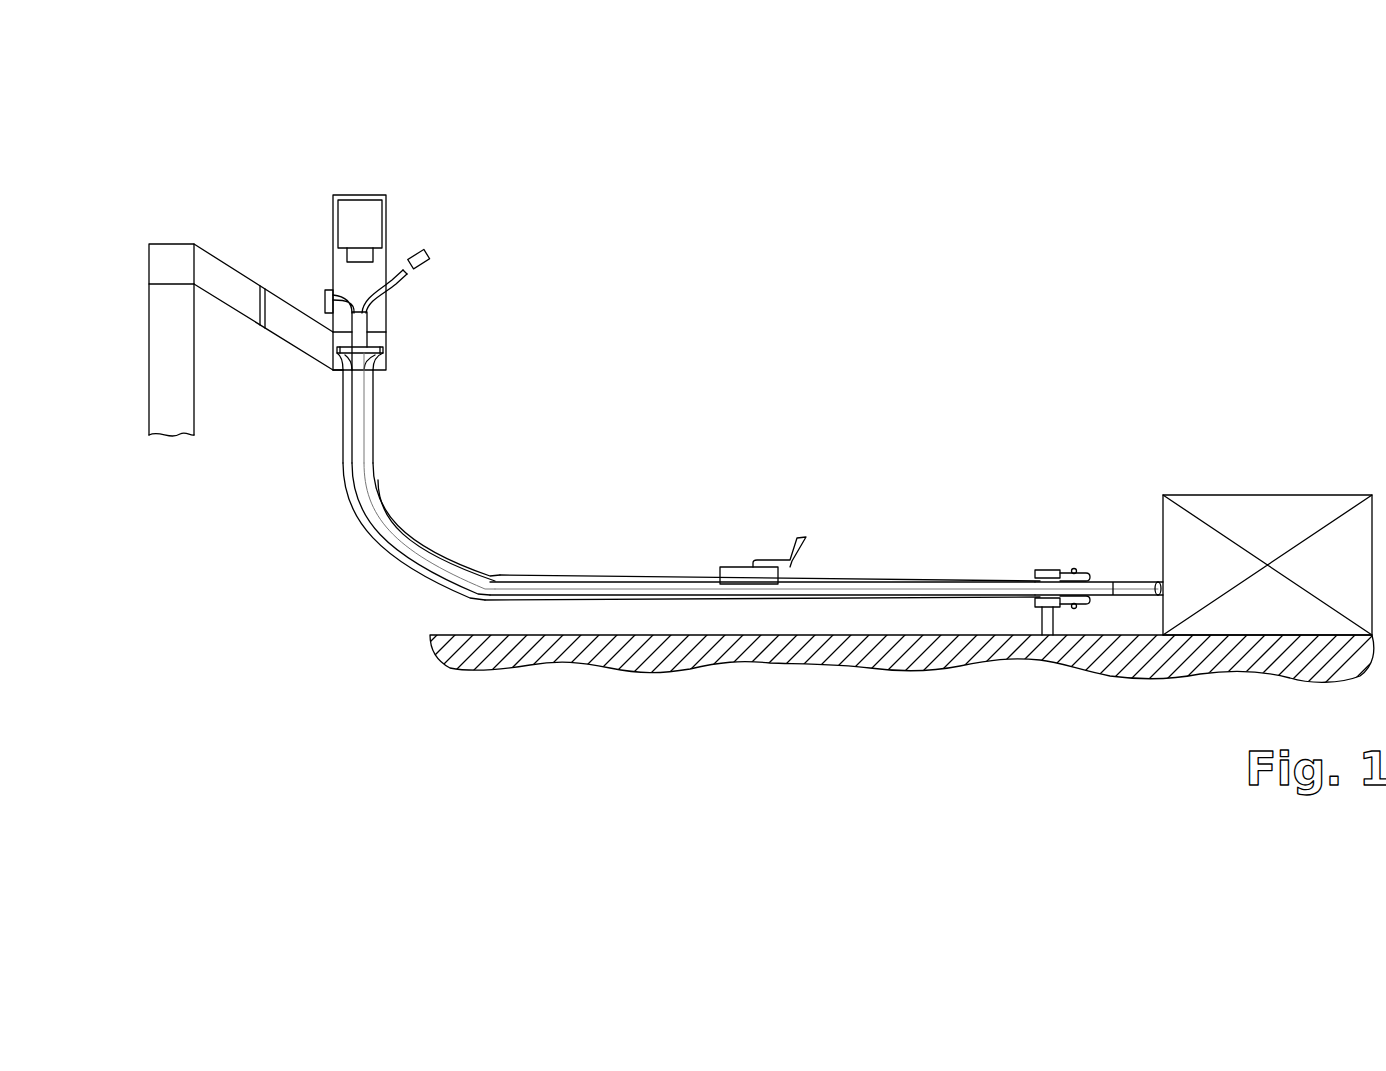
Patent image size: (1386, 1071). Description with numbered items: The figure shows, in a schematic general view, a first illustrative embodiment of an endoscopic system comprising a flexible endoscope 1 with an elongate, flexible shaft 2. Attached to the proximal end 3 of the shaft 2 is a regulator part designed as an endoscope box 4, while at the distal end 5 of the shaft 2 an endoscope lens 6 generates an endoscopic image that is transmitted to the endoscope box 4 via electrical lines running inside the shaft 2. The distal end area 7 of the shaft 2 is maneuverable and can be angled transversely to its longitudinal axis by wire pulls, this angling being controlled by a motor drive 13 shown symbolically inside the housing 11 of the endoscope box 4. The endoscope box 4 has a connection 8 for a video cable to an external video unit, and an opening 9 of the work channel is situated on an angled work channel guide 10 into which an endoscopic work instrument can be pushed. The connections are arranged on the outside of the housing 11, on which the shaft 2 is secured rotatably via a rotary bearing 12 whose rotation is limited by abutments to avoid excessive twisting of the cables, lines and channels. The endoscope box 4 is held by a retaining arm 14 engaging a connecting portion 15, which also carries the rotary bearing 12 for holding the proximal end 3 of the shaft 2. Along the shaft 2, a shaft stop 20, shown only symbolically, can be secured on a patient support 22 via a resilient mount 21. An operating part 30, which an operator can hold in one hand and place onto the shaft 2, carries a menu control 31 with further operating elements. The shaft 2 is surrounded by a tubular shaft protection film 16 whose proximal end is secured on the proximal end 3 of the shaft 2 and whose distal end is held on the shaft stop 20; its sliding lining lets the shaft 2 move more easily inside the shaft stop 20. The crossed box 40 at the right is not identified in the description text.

The flexible endoscope 1 is at (535, 486).
The shaft 2 is at (430, 572).
The proximal end 3 is at (416, 386).
The endoscope box 4 is at (444, 220).
The distal end 5 is at (1138, 484).
The endoscope lens 6 is at (1155, 581).
The distal end area 7 is at (1125, 586).
The connection 8 is at (329, 292).
The opening 9 is at (428, 258).
The work channel guide 10 is at (397, 268).
The housing 11 is at (384, 314).
The rotary bearing 12 is at (385, 350).
The motor drive 13 is at (358, 210).
The retaining arm 14 is at (140, 280).
The connecting portion 15 is at (340, 366).
The shaft protection film 16 is at (635, 576).
The shaft stop 20 is at (1051, 536).
The resilient mount 21 is at (1048, 625).
The patient support 22 is at (862, 655).
The operating part 30 is at (741, 532).
The menu control 31 is at (788, 545).
The tank 40 is at (1271, 466).